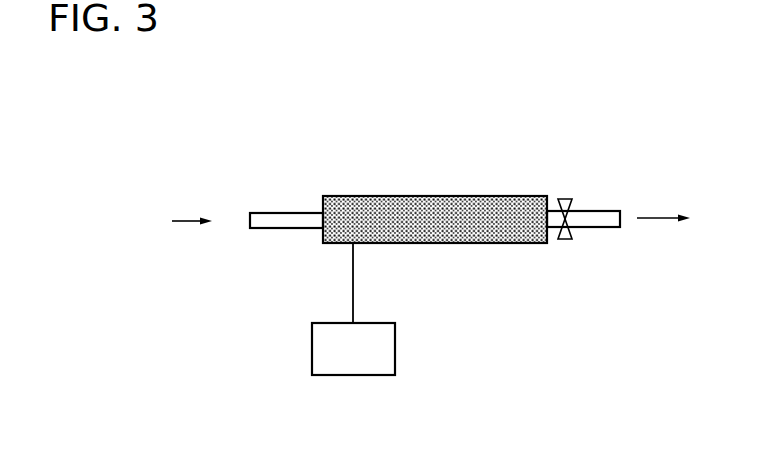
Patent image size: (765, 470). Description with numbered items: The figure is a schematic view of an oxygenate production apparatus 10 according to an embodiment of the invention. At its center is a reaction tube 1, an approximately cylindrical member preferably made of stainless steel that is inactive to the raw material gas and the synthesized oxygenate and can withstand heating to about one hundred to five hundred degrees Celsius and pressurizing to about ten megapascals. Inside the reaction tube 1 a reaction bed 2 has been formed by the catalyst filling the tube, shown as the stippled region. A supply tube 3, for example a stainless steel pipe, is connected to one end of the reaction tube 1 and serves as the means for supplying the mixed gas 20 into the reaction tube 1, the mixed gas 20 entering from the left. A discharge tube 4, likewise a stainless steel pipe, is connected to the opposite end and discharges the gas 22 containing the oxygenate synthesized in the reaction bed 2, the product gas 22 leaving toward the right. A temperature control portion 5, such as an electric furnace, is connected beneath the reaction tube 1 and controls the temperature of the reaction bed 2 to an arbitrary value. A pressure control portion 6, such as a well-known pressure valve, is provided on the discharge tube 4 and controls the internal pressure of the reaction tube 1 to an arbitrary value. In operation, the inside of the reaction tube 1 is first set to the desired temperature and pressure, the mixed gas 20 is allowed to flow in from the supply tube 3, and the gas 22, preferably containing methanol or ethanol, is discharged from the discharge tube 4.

The reaction tube 1 is at (467, 243).
The reaction bed 2 is at (398, 243).
The supply tube 3 is at (293, 222).
The discharge tube 4 is at (598, 228).
The temperature control portion 5 is at (357, 368).
The pressure control portion 6 is at (565, 240).
The production apparatus 10 is at (507, 164).
The mixed gas 20 is at (178, 221).
The gas 22 is at (678, 220).